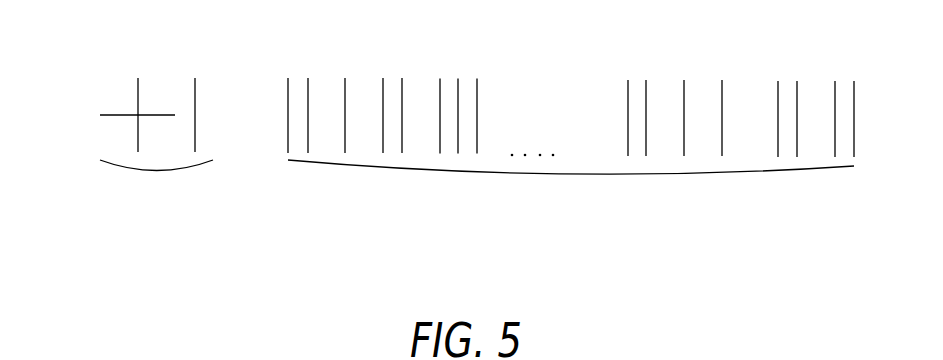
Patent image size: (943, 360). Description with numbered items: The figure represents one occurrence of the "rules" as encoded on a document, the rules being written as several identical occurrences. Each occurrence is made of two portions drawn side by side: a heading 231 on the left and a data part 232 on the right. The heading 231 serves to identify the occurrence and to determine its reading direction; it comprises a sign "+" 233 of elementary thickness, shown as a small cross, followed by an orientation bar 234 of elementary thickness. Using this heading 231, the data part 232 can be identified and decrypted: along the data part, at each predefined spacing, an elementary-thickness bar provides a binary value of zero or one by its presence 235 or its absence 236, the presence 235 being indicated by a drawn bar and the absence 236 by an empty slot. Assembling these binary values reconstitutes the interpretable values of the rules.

The heading 231 is at (130, 112).
The data part 232 is at (546, 112).
The sign "+" 233 is at (110, 89).
The orientation bar 234 is at (185, 67).
The presence of a bar 235 is at (299, 70).
The absence of a bar 236 is at (374, 67).